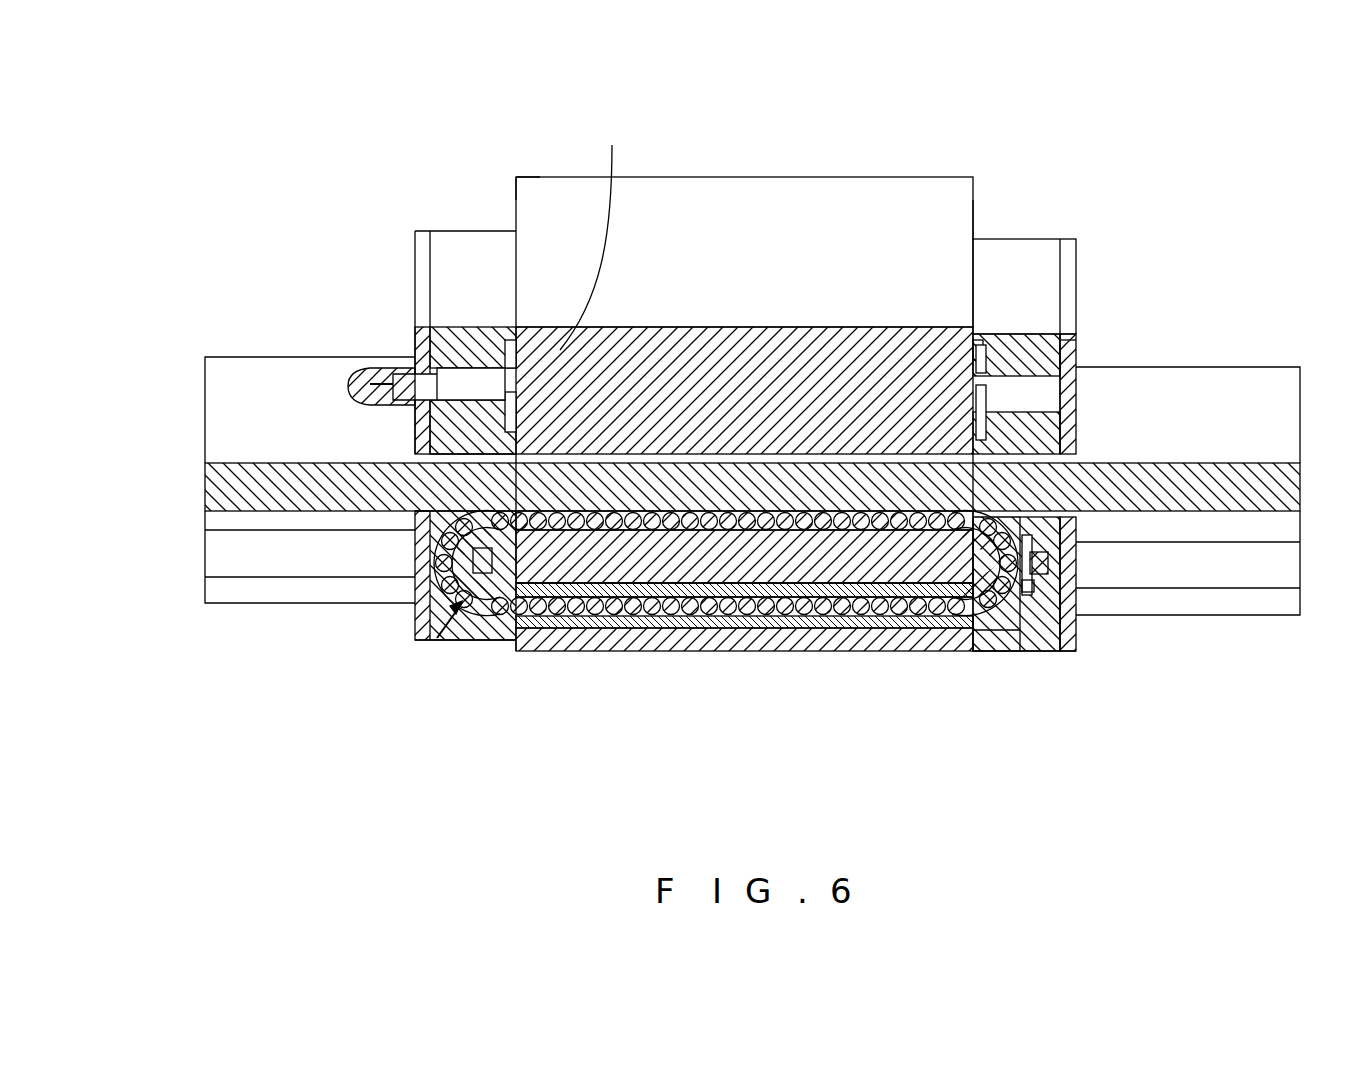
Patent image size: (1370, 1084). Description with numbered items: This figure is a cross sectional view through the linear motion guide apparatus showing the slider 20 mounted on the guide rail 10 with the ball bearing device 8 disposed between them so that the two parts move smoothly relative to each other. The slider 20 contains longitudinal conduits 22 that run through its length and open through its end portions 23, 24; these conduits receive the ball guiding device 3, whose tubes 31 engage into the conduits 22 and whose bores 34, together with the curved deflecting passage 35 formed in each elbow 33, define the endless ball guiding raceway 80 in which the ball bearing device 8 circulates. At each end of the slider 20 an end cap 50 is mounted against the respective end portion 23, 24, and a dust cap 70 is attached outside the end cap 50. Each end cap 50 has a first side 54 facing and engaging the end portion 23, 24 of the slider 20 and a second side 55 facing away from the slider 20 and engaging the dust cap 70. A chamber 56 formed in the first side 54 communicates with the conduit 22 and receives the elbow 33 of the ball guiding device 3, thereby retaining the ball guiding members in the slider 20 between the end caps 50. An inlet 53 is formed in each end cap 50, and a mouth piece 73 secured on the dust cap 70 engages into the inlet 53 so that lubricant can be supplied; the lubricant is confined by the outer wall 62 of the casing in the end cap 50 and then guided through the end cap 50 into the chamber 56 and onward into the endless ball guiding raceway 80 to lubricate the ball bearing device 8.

The guide rail 10 is at (1212, 382).
The slider 20 is at (822, 200).
The longitudinal conduits 22 is at (700, 617).
The end portion 23 is at (516, 177).
The end portion 24 is at (975, 197).
The ball guiding device 3 is at (425, 642).
The tube 31 is at (888, 626).
The elbow 33 is at (1012, 626).
The bore 34 is at (787, 616).
The deflecting passage 35 is at (440, 575).
The end cap 50 is at (1030, 272).
The inlet 53 is at (468, 380).
The first side 54 is at (968, 332).
The second side 55 is at (1062, 352).
The chamber 56 is at (1045, 575).
The outer wall 62 is at (598, 228).
The dust cap 70 is at (418, 256).
The mouth piece 73 is at (365, 368).
The ball bearing device 8 is at (950, 612).
The endless ball guiding raceway 80 is at (514, 616).